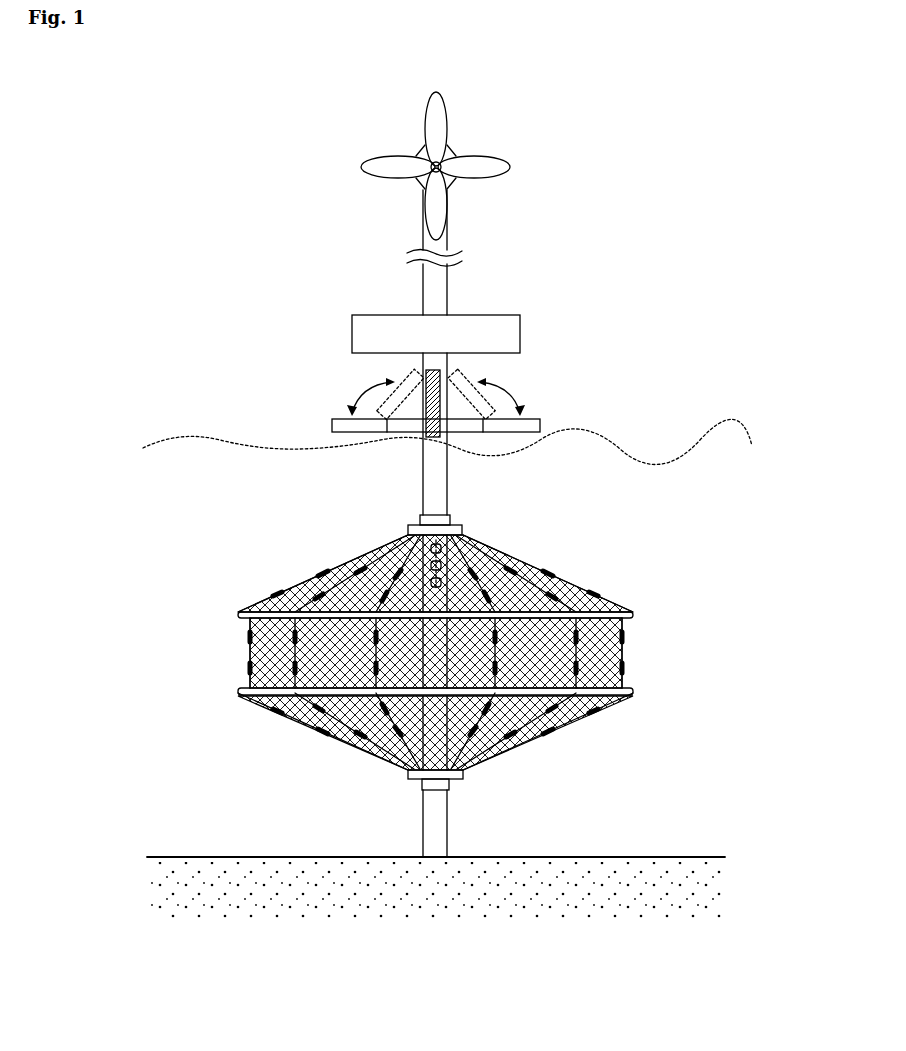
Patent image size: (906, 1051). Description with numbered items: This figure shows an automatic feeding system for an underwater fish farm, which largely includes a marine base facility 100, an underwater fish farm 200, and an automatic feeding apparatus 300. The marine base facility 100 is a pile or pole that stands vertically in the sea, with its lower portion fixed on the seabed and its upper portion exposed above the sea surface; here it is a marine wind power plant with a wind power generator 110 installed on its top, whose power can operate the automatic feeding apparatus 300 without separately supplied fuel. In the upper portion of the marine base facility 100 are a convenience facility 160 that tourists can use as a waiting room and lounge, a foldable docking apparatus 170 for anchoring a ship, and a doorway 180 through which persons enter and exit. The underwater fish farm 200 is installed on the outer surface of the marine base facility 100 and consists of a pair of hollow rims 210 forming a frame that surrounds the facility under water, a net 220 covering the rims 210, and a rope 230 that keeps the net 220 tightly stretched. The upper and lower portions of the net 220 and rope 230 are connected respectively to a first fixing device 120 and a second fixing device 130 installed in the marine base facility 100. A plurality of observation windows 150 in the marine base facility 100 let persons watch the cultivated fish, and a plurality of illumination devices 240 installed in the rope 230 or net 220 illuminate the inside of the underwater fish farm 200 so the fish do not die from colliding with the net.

The marine base facility 100 is at (447, 288).
The wind power generator 110 is at (452, 143).
The first fixing device 120 is at (410, 526).
The second fixing device 130 is at (455, 785).
The observation window 150 is at (465, 540).
The convenience facility 160 is at (520, 338).
The docking apparatus 170 is at (540, 425).
The doorway 180 is at (455, 385).
The underwater fish farm 200 is at (470, 657).
The rims 210 is at (634, 615).
The net 220 is at (580, 577).
The rope 230 is at (292, 582).
The illumination devices 240 is at (508, 562).
The automatic feeding apparatus 300 is at (420, 372).